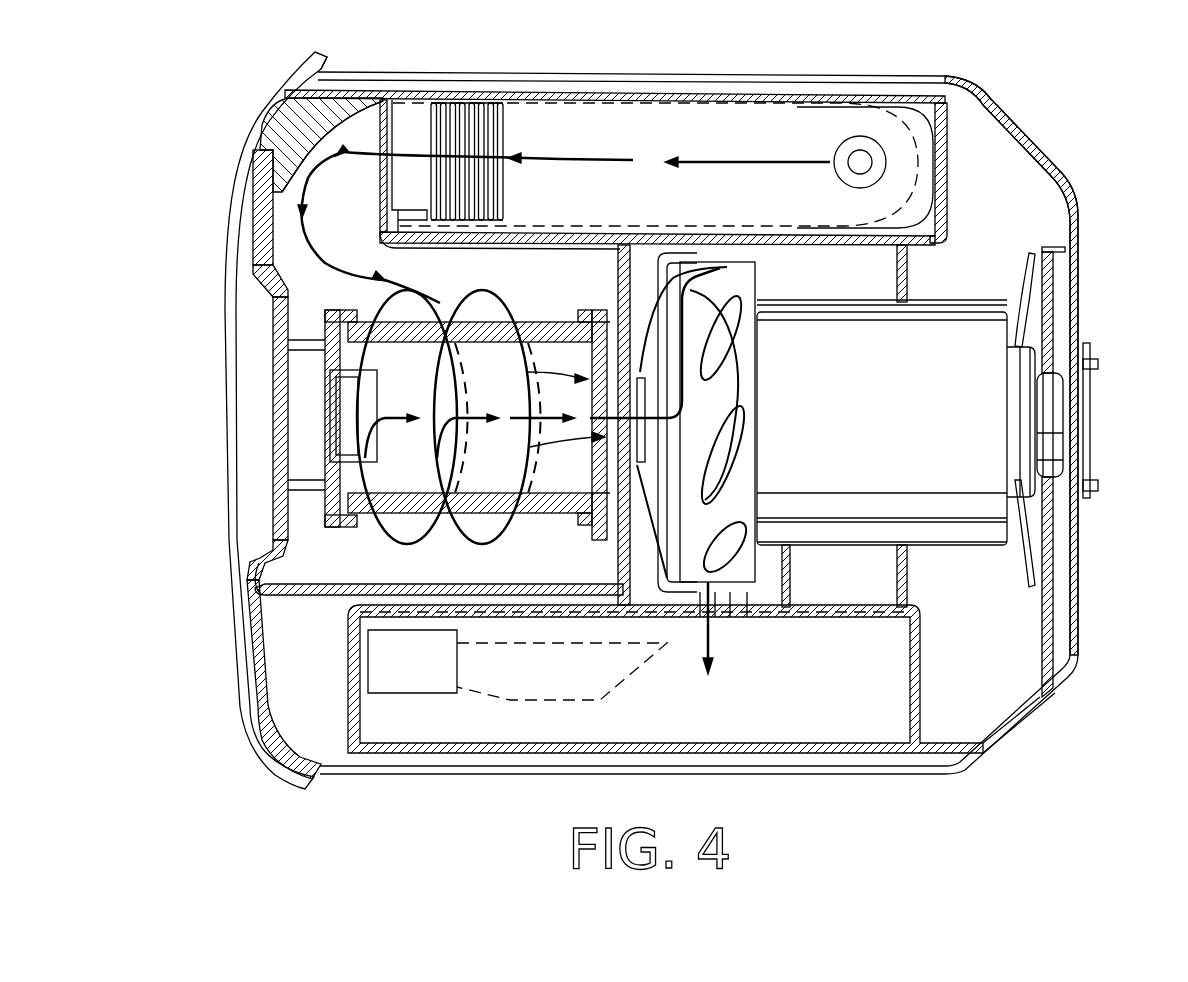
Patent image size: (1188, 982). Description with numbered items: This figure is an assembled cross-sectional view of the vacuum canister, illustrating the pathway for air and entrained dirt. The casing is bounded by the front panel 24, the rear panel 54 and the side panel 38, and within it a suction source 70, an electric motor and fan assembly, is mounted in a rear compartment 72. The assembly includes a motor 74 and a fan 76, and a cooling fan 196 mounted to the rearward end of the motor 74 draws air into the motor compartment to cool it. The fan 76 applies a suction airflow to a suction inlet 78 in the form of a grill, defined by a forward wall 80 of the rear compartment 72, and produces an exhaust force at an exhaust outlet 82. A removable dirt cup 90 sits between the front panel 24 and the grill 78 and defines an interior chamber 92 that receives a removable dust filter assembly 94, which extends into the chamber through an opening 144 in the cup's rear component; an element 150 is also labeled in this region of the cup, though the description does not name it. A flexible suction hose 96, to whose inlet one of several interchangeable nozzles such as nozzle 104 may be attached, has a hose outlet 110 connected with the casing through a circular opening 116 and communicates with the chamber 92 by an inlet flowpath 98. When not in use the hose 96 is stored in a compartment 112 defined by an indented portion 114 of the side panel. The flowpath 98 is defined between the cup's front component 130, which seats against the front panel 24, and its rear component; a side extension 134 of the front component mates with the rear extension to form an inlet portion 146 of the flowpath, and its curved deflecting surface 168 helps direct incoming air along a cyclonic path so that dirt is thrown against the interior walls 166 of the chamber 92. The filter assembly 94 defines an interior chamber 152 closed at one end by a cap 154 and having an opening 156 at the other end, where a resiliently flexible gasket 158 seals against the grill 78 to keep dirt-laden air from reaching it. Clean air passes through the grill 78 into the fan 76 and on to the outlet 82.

The front panel 24 is at (270, 403).
The side panel 38 is at (347, 743).
The rear panel 54 is at (1082, 545).
The suction source 70 is at (898, 332).
The rear compartment 72 is at (832, 287).
The motor 74 is at (913, 528).
The fan 76 is at (743, 560).
The suction inlet 78 is at (600, 342).
The forward wall 80 is at (637, 262).
The exhaust outlet 82 is at (737, 610).
The dirt cup 90 is at (262, 560).
The interior chamber 92 is at (412, 575).
The dust filter assembly 94 is at (377, 530).
The suction hose 96 is at (577, 97).
The inlet flowpath 98 is at (262, 143).
The nozzle 104 is at (403, 687).
The hose outlet 110 is at (410, 110).
The compartment 112 is at (925, 127).
The indented portion 114 is at (947, 189).
The circular opening 116 is at (385, 135).
The front component 130 is at (277, 592).
The side extension 134 is at (262, 213).
The opening 144 is at (546, 446).
The inlet portion 146 is at (320, 230).
The mounting bracket 150 is at (373, 317).
The interior chamber 152 is at (428, 383).
The cap 154 is at (325, 425).
The opening 156 is at (535, 373).
The gasket 158 is at (577, 530).
The interior walls 166 is at (420, 583).
The curved deflecting surface 168 is at (337, 137).
The cooling fan 196 is at (1033, 303).